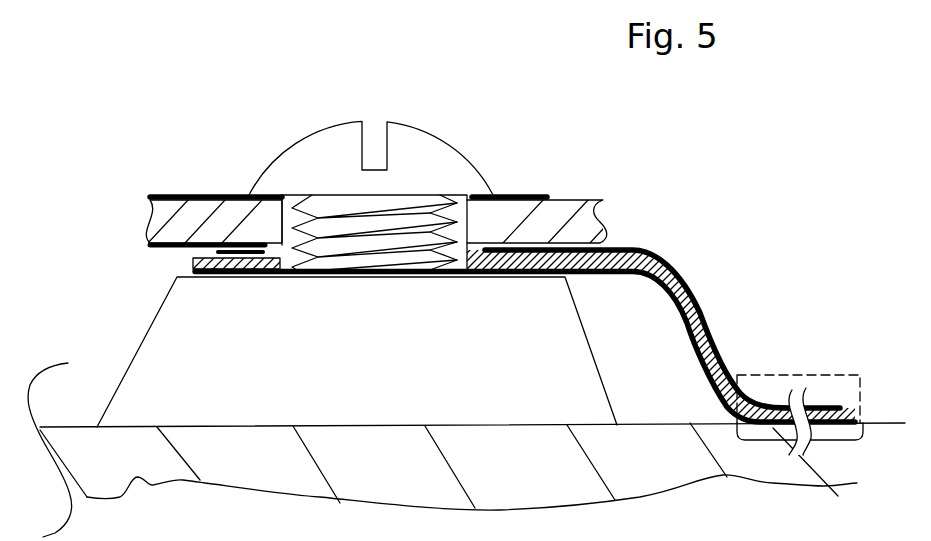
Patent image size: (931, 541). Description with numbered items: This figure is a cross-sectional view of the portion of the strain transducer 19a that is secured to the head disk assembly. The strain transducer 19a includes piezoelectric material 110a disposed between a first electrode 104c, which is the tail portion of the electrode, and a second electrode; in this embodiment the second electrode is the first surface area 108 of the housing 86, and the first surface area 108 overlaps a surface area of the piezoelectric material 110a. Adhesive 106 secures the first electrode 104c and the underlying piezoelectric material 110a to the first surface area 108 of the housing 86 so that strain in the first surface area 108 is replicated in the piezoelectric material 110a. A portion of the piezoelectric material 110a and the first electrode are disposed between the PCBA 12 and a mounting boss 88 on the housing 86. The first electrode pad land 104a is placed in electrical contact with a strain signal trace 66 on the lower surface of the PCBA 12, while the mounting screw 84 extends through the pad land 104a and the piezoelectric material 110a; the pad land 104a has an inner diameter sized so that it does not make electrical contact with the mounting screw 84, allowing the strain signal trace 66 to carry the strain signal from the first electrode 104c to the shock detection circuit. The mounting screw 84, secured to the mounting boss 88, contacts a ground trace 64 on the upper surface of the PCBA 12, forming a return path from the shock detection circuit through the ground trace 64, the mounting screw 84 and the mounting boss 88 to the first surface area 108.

The PCBA 12 is at (604, 219).
The strain transducer 19a is at (862, 376).
The ground trace 64 is at (163, 196).
The strain signal trace 66 is at (150, 248).
The mounting screw 84 is at (280, 156).
The housing 86 is at (52, 426).
The mounting boss 88 is at (137, 350).
The pad land 104a is at (193, 261).
The first electrode 104c is at (681, 267).
The adhesive 106 is at (705, 363).
The first surface area 108 is at (814, 474).
The piezoelectric material 110a is at (735, 401).